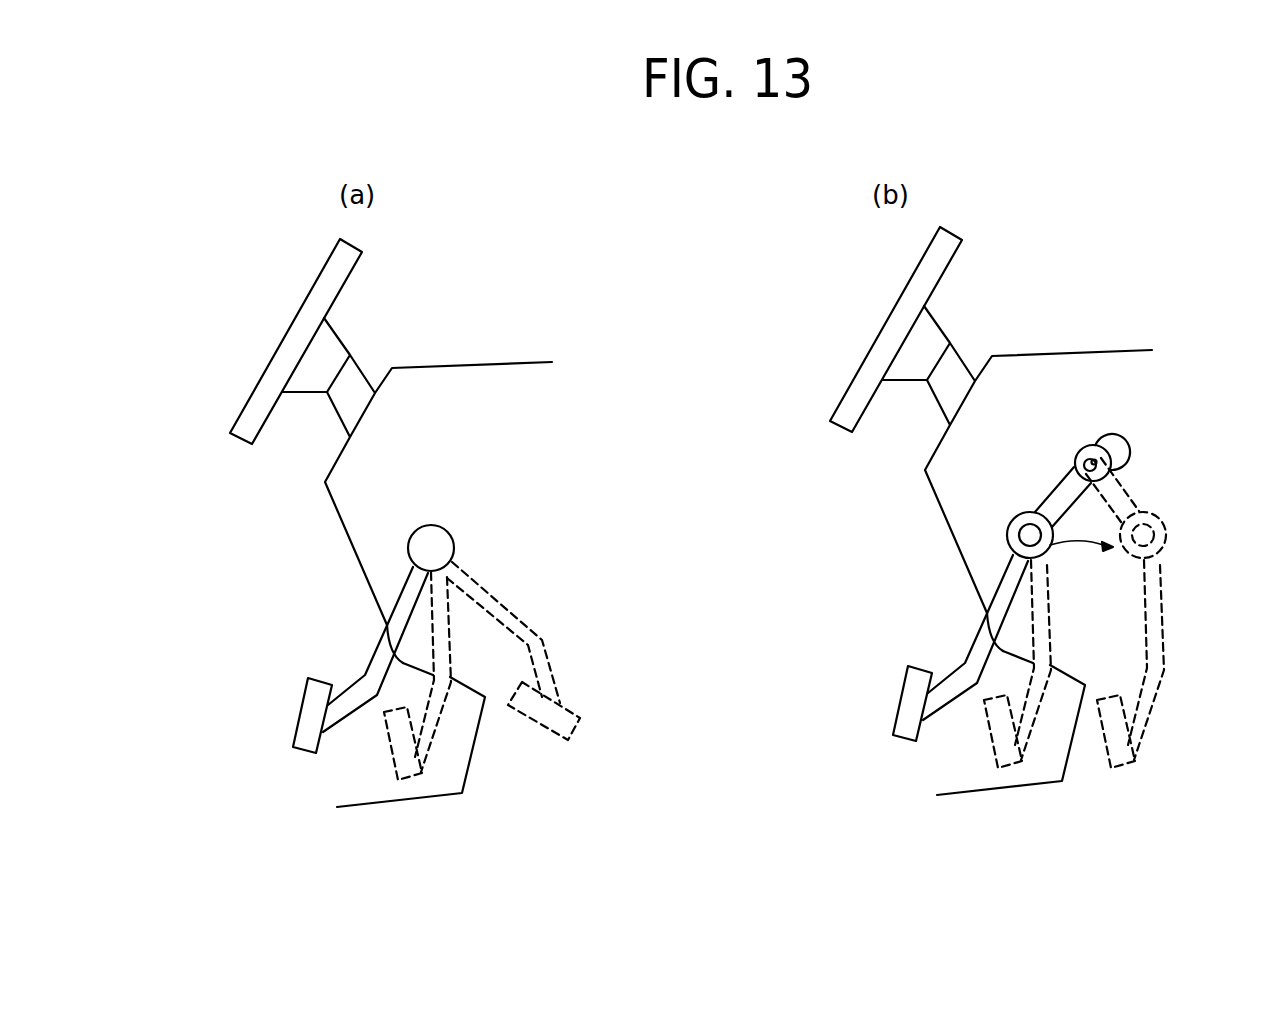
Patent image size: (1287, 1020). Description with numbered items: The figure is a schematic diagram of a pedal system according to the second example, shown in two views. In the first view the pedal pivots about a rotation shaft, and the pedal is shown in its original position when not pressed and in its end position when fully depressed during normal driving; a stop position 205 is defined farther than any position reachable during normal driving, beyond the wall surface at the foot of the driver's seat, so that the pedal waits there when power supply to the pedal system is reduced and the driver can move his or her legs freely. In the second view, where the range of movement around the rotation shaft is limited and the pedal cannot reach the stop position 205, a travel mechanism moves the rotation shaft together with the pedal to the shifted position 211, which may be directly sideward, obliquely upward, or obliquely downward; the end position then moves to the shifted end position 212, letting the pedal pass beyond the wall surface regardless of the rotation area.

The stop position 205 is at (565, 717).
The moved rotation shaft position 211 is at (1163, 538).
The moved end position 212 is at (1123, 753).